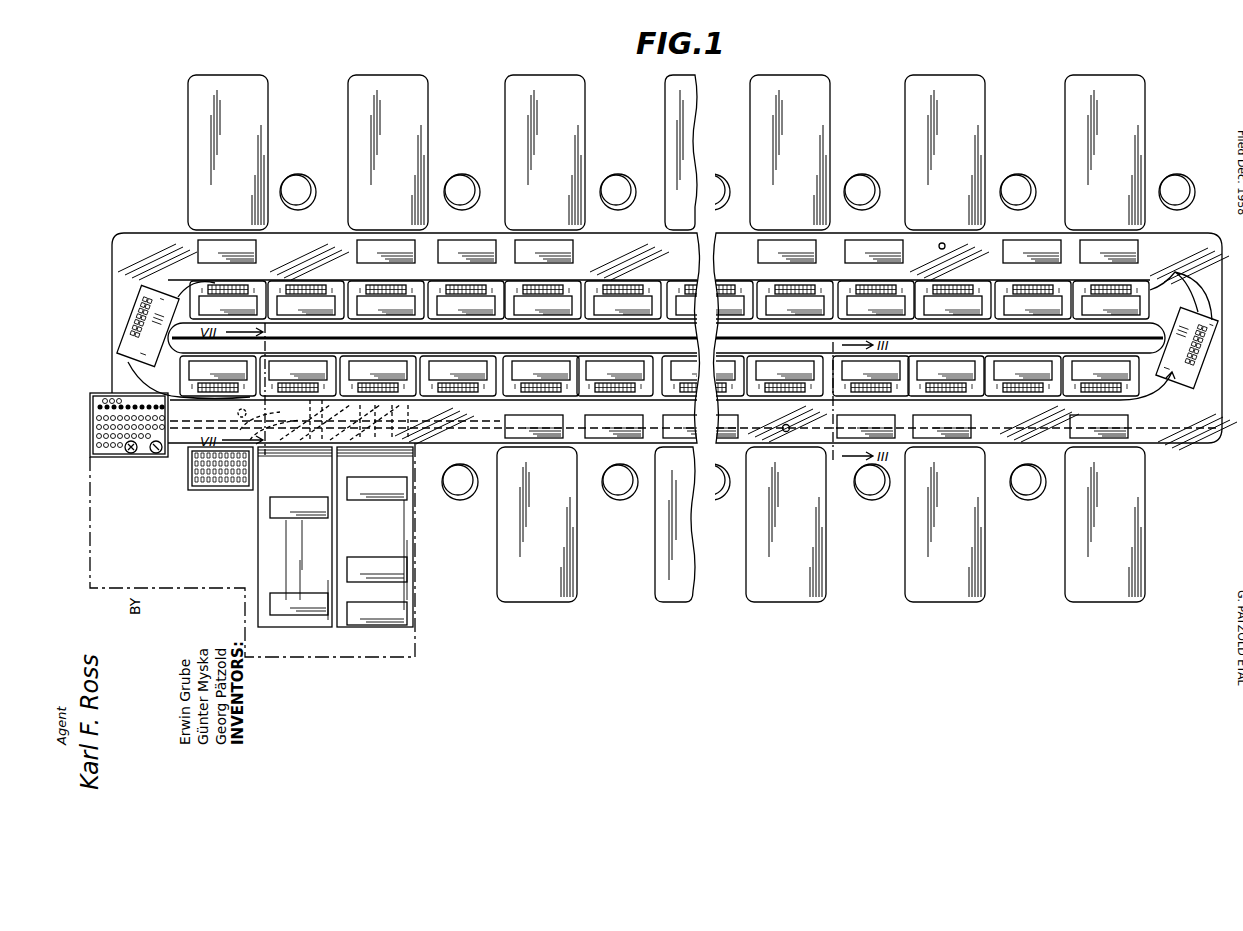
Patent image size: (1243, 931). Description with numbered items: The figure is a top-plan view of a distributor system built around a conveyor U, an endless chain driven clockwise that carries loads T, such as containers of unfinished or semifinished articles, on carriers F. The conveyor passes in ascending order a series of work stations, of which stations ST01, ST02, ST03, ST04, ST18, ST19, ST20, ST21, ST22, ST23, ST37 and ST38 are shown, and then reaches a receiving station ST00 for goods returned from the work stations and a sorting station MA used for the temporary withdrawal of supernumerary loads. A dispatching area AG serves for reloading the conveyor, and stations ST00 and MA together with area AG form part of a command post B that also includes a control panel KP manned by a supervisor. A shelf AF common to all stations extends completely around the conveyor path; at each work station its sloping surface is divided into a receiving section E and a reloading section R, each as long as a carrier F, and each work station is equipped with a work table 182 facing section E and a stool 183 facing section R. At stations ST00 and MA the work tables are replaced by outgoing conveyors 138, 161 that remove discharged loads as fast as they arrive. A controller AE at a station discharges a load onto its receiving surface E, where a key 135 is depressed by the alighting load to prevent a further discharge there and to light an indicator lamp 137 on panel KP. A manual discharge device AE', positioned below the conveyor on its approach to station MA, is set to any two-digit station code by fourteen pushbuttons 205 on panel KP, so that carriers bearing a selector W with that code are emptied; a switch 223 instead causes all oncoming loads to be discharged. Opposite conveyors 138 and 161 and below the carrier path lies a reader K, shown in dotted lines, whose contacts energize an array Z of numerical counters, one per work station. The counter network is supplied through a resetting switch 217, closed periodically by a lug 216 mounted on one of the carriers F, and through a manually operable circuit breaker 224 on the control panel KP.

The receiving station ST00 is at (365, 460).
The work station ST01 is at (262, 133).
The work station ST02 is at (422, 133).
The work station ST03 is at (578, 132).
The work station ST04 is at (688, 128).
The work station ST18 is at (820, 128).
The work station ST19 is at (976, 131).
The work station ST20 is at (1133, 127).
The work station ST21 is at (1098, 602).
The work station ST22 is at (940, 602).
The work station ST23 is at (780, 602).
The work station ST37 is at (668, 602).
The work station ST38 is at (524, 600).
The control panel KP is at (137, 455).
The pushbuttons 205 is at (142, 400).
The indicator lamp 137 is at (100, 432).
The switch 223 is at (130, 455).
The dispatching area AG is at (180, 448).
The circuit breaker 224 is at (168, 478).
The array of counters Z is at (232, 492).
The resetting switch 217 is at (240, 411).
The lug 216 is at (273, 462).
The sorting station MA is at (308, 440).
The outgoing conveyor 161 is at (258, 568).
The outgoing conveyor 138 is at (413, 588).
The stool 183 is at (457, 500).
The work table 182 is at (553, 558).
The key 135 is at (786, 432).
The command post B is at (312, 650).
The load T is at (1076, 413).
The receiving section E is at (963, 403).
The reloading section R is at (890, 404).
The reader K is at (388, 345).
The manual discharge device AE' is at (343, 345).
The controller AE is at (435, 345).
The selector W is at (1218, 344).
The carrier F is at (1181, 283).
The conveyor U is at (1172, 380).
The shelf AF is at (1168, 423).